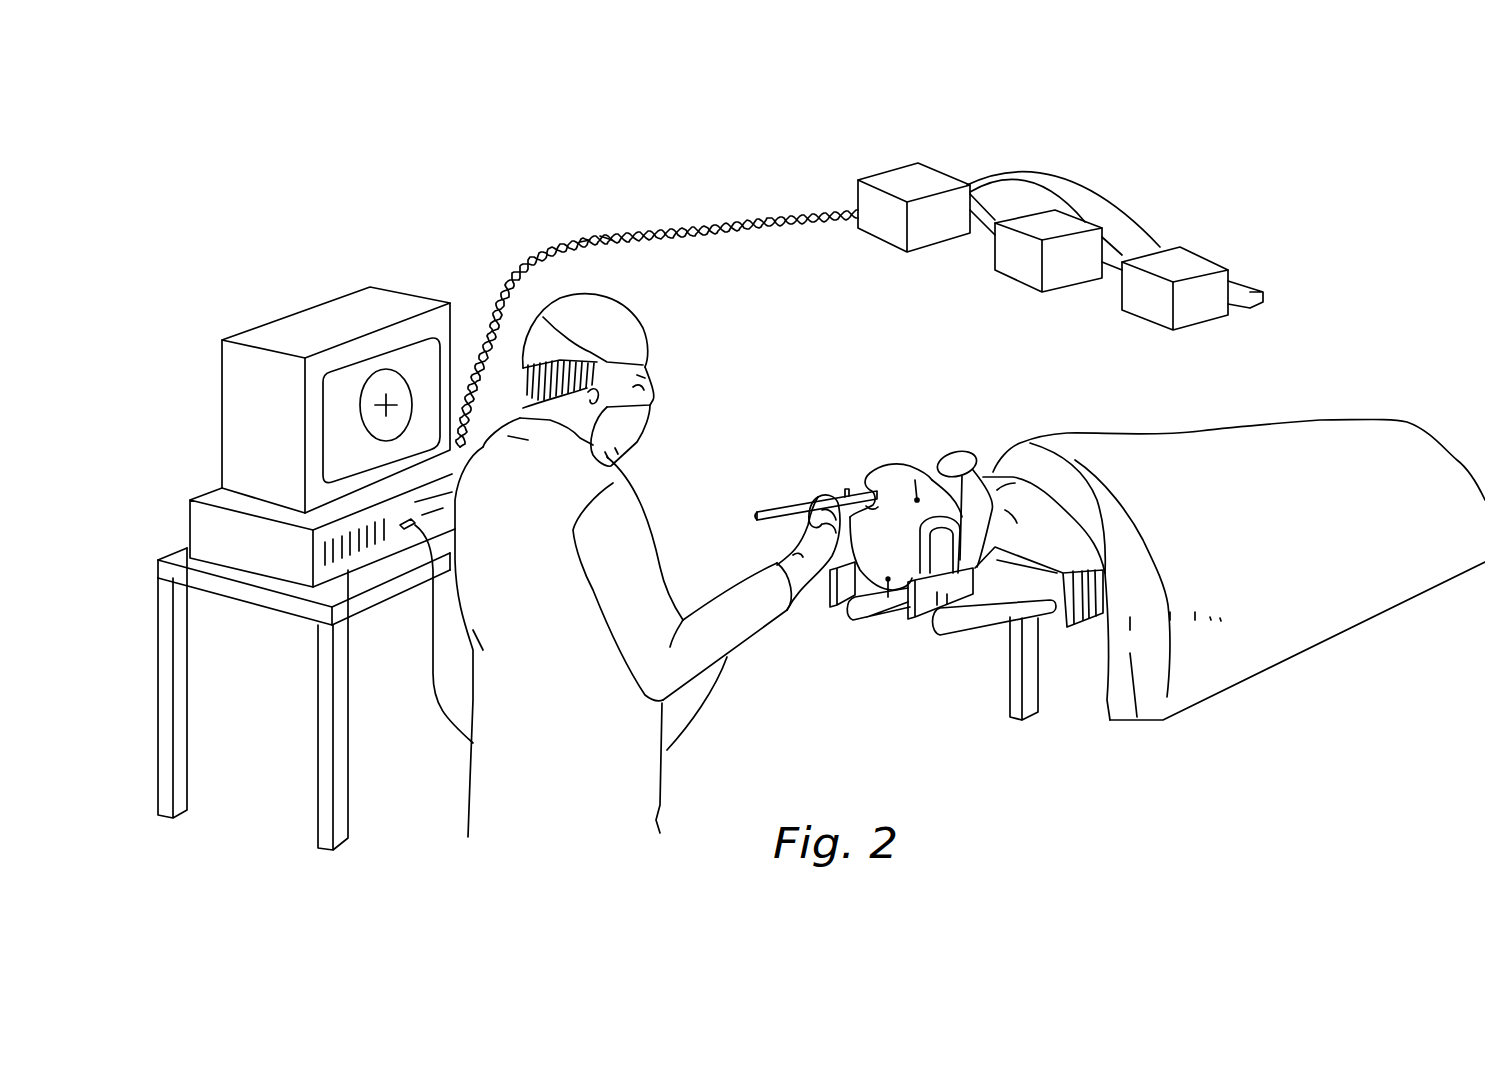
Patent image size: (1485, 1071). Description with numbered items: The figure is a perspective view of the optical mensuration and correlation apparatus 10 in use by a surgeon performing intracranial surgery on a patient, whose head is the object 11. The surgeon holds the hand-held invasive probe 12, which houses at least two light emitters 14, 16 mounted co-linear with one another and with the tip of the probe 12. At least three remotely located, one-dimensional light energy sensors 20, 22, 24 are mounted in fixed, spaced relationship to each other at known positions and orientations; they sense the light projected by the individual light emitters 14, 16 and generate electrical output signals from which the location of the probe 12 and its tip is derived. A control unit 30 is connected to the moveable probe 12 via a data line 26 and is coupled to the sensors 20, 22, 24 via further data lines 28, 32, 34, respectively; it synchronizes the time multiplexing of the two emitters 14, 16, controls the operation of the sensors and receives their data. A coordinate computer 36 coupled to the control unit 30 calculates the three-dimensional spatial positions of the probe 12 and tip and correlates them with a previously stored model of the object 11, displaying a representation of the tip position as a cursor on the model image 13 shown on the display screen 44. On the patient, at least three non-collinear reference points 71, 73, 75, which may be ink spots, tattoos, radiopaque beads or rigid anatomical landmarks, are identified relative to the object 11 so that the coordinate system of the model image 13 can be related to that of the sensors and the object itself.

The optical mensuration and correlation apparatus 10 is at (265, 230).
The object 11 is at (907, 466).
The hand-held invasive probe 12 is at (796, 496).
The model image 13 is at (370, 378).
The light emitter 14 is at (848, 489).
The light emitter 16 is at (768, 507).
The light energy sensor 20 is at (853, 192).
The light energy sensor 22 is at (1015, 270).
The light energy sensor 24 is at (1180, 257).
The data line 26 is at (445, 713).
The data line 28 is at (623, 237).
The control unit 30 is at (407, 607).
The cable 32 is at (607, 238).
The data line 34 is at (587, 237).
The coordinate computer 36 is at (195, 485).
The display screen 44 is at (325, 302).
The reference point 71 is at (882, 610).
The reference point 73 is at (918, 498).
The reference point 75 is at (860, 573).